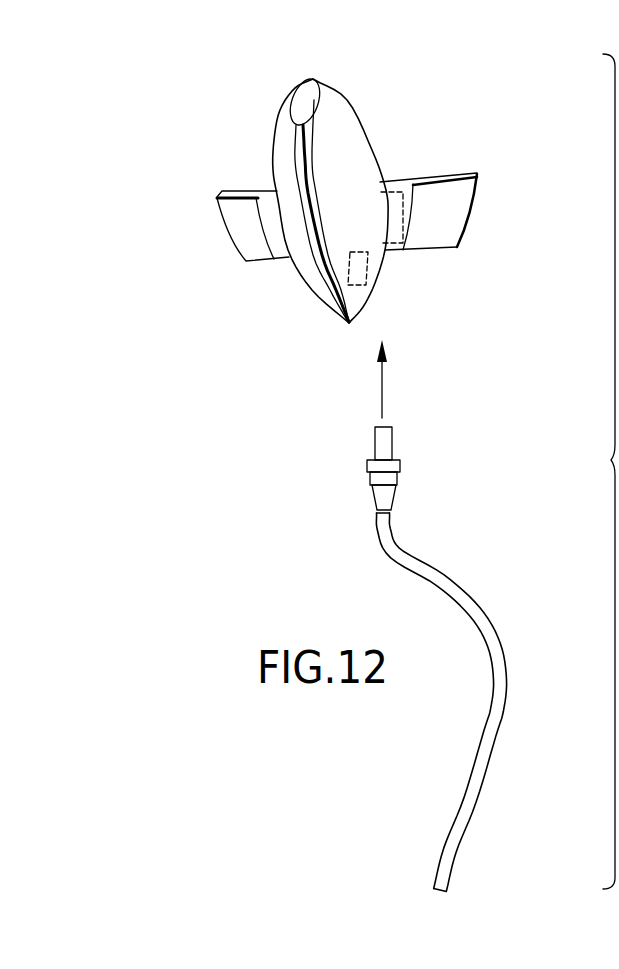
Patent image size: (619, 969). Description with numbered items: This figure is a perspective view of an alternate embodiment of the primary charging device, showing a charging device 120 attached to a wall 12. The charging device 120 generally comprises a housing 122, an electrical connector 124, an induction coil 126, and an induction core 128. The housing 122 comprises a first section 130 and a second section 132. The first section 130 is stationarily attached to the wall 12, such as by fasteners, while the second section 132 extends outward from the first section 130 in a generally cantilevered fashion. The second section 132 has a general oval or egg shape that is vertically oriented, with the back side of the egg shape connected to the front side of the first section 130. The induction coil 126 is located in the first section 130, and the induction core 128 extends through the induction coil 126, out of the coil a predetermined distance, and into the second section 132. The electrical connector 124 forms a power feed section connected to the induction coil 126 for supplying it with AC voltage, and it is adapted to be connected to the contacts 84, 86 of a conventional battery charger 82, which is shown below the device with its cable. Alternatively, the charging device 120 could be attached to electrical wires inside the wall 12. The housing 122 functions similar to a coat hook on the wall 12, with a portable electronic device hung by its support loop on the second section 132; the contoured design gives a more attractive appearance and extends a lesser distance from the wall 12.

The wall 12 is at (462, 98).
The conventional battery charger 82 is at (467, 585).
The contact 84 is at (392, 437).
The contact 86 is at (385, 418).
The charging device 120 is at (348, 100).
The housing 122 is at (460, 176).
The electrical connector 124 is at (366, 266).
The induction coil 126 is at (410, 217).
The induction core 128 is at (343, 150).
The first section 130 is at (240, 220).
The second section 132 is at (300, 150).